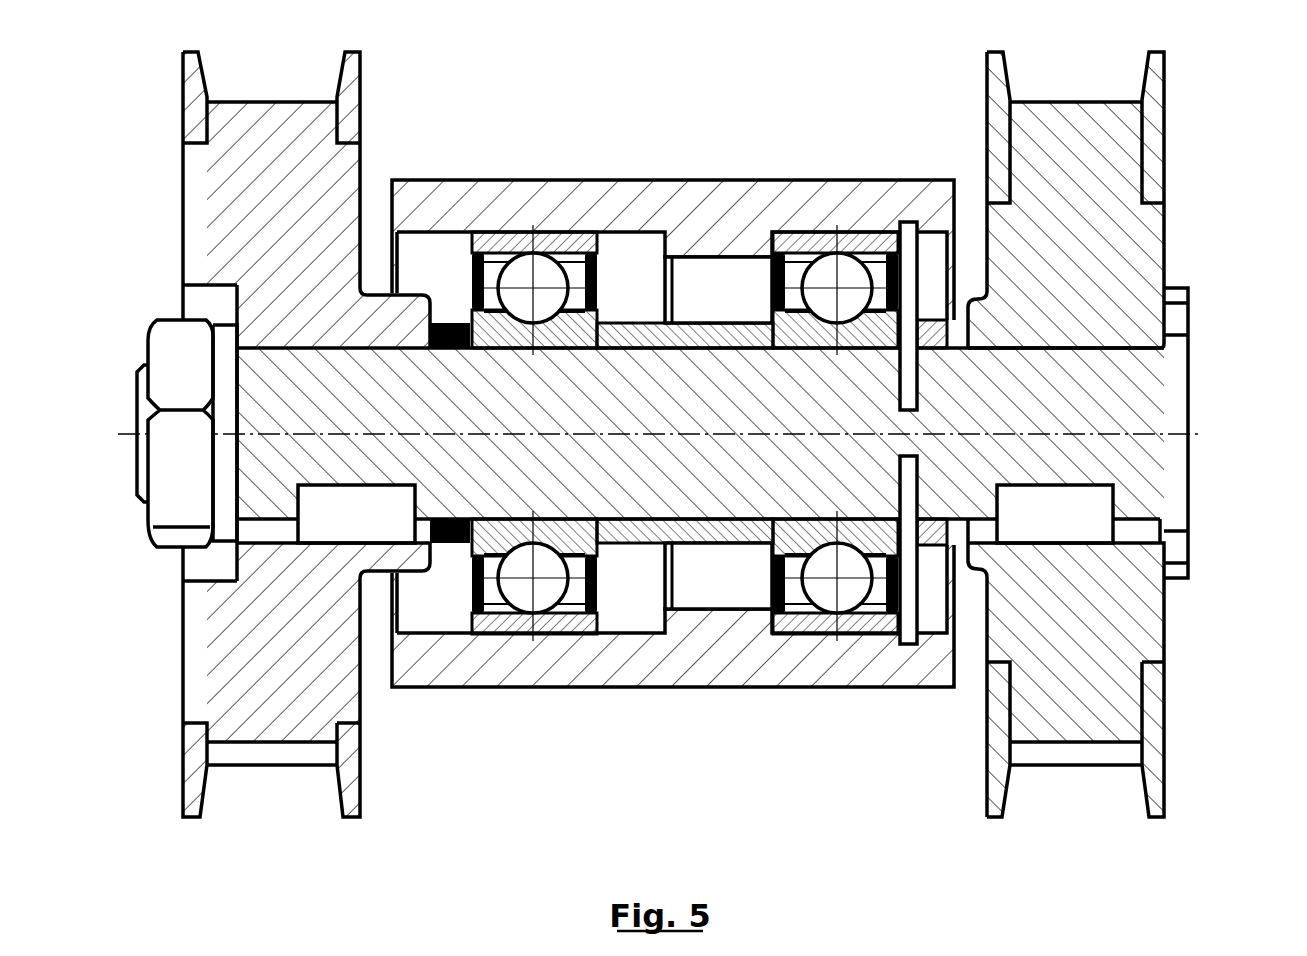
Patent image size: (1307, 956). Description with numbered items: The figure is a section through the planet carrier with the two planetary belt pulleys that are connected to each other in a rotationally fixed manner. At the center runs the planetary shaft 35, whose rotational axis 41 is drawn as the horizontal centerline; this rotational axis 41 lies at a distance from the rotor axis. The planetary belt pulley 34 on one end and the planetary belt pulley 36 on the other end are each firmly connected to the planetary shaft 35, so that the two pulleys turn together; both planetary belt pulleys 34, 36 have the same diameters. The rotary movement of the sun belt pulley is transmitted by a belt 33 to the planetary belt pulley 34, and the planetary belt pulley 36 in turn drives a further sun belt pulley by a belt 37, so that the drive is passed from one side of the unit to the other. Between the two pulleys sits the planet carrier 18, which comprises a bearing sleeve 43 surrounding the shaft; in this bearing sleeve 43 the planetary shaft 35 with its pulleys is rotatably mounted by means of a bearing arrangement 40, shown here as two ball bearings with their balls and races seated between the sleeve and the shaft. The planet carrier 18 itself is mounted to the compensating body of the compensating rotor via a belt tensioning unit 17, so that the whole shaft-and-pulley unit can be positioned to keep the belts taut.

The belt tensioning unit 17 is at (673, 397).
The planet carrier 18 is at (683, 197).
The belt 33 is at (223, 755).
The planetary belt pulley 34 is at (287, 707).
The planetary shaft 35 is at (1117, 388).
The planetary belt pulley 36 is at (1078, 705).
The belt 37 is at (1023, 753).
The bearing arrangement 40 is at (508, 212).
The rotational axis 41 is at (1192, 437).
The bearing sleeve 43 is at (718, 665).